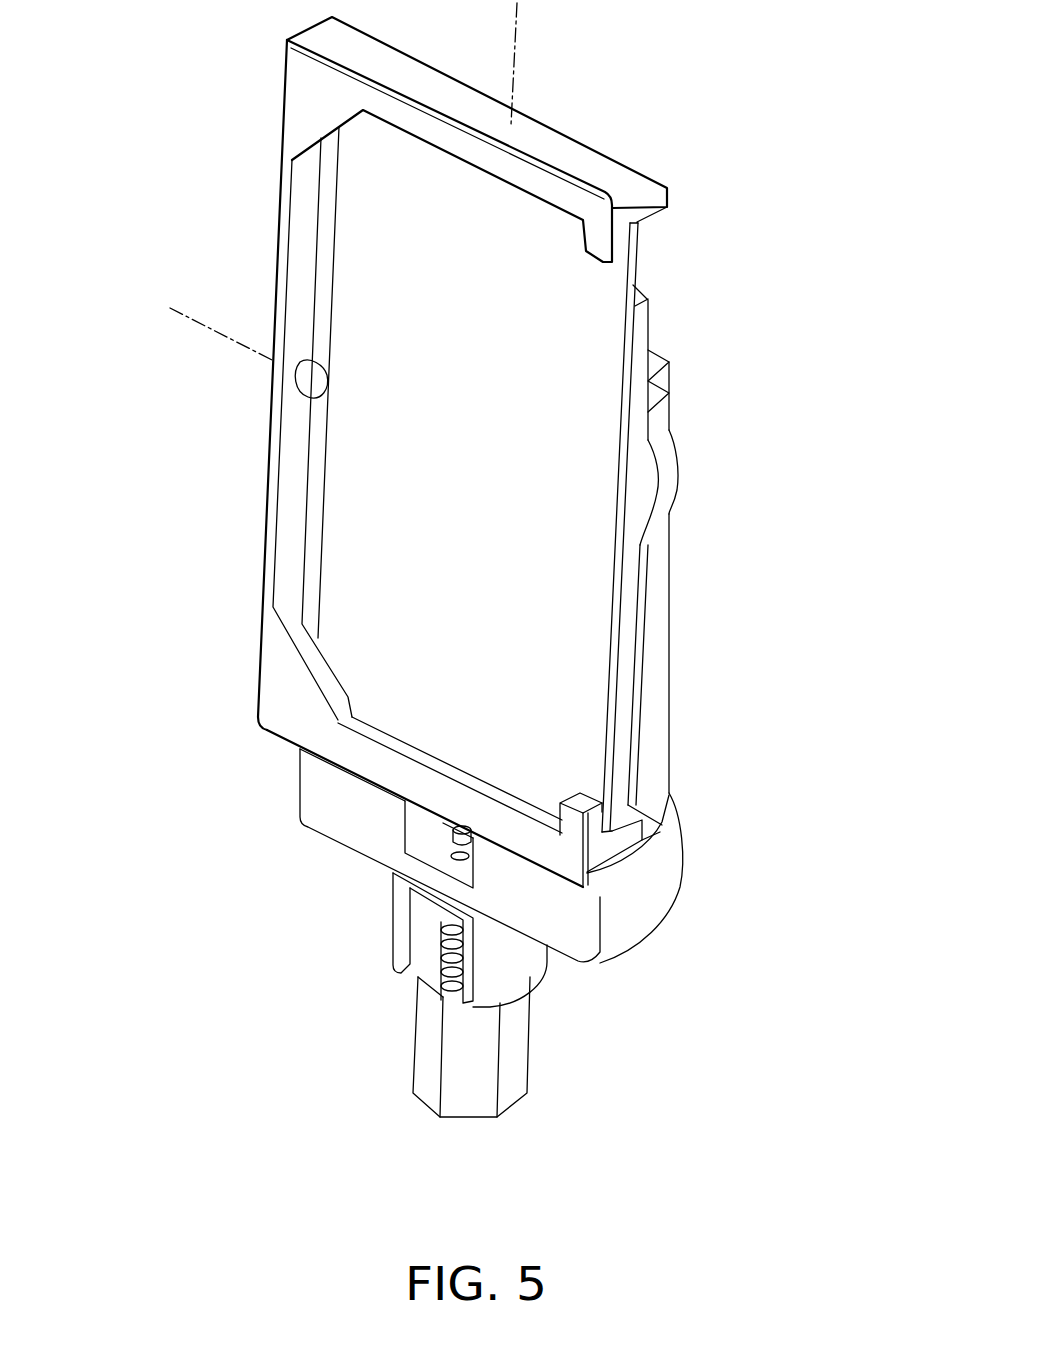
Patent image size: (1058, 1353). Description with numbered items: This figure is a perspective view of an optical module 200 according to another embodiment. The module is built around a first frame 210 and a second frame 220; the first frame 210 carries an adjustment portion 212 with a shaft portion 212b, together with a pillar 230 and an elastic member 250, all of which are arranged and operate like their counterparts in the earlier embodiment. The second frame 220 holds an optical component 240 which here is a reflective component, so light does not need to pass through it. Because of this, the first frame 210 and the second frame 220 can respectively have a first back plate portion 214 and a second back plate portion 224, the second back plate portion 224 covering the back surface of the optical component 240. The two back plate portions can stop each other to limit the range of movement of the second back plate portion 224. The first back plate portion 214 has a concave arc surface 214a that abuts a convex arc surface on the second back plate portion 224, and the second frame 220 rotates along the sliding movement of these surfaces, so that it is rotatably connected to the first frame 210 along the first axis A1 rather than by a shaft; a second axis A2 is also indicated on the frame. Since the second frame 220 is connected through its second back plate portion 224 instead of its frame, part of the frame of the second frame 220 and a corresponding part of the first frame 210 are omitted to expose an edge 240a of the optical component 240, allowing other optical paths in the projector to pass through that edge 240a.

The optical module 200 is at (708, 1128).
The first frame 210 is at (692, 930).
The adjustment portion 212 is at (617, 940).
The shaft portion 212b is at (527, 973).
The first back plate portion 214 is at (653, 598).
The concave arc surface 214a is at (648, 490).
The second frame 220 is at (272, 678).
The second back plate portion 224 is at (640, 337).
The pillar 230 is at (517, 1073).
The optical component 240 is at (592, 643).
The edge of optical component 240a is at (632, 286).
The elastic member 250 is at (440, 930).
The first axis A1 is at (215, 330).
The second axis A2 is at (515, 66).